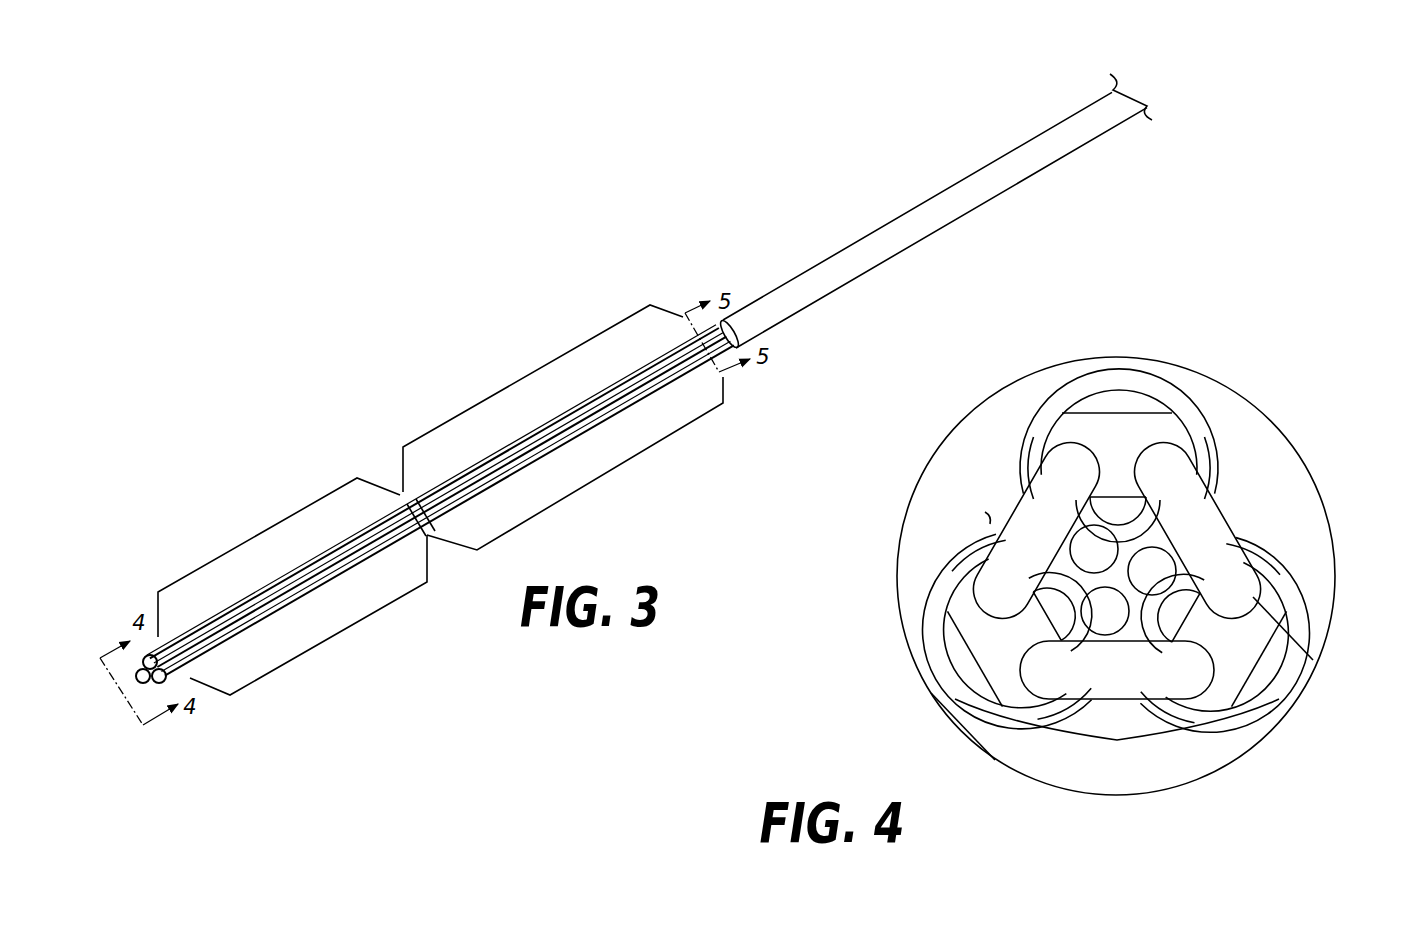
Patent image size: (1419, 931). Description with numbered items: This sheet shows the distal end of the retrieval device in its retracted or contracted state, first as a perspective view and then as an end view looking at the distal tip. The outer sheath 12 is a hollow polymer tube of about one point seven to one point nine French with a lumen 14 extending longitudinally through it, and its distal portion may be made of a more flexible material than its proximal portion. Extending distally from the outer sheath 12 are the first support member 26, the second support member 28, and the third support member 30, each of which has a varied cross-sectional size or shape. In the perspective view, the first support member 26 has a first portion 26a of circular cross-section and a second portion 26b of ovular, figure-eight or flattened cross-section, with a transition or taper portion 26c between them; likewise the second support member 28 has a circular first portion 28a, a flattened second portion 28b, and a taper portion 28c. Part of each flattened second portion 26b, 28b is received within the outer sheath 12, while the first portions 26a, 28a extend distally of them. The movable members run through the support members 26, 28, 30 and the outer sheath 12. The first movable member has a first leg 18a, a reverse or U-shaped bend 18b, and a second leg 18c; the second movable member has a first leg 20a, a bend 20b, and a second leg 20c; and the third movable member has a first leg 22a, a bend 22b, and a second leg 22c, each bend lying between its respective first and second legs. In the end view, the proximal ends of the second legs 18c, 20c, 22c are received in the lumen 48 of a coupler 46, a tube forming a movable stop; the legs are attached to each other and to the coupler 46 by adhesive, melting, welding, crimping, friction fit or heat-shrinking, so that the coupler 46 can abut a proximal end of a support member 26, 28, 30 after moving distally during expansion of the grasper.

In FIG. 3, the outer sheath 12 is at (1104, 135).
In FIG. 4, the outer sheath 12 is at (898, 605).
In FIG. 4, the lumen 14 is at (985, 512).
In FIG. 4, the first leg 18a is at (1067, 450).
In FIG. 4, the U-shaped bend 18b is at (1028, 530).
In FIG. 4, the second leg 18c is at (958, 556).
In FIG. 4, the first leg 20a is at (1025, 685).
In FIG. 4, the U-shaped bend 20b is at (1127, 680).
In FIG. 4, the second leg 20c is at (1195, 683).
In FIG. 4, the first leg 22a is at (1238, 655).
In FIG. 4, the U-shaped bend 22b is at (1260, 483).
In FIG. 4, the second leg 22c is at (1165, 452).
In FIG. 4, the first support member 26 is at (1136, 398).
In FIG. 3, the first portion 26a is at (257, 534).
In FIG. 3, the second portion 26b is at (530, 373).
In FIG. 3, the transition or taper portion 26c is at (412, 498).
In FIG. 4, the second support member 28 is at (950, 674).
In FIG. 3, the first portion 28a is at (330, 638).
In FIG. 3, the second portion 28b is at (607, 475).
In FIG. 3, the transition or taper portion 28c is at (428, 522).
In FIG. 4, the third support member 30 is at (1268, 687).
In FIG. 4, the coupler 46 is at (1264, 686).
In FIG. 4, the lumen 48 is at (983, 480).